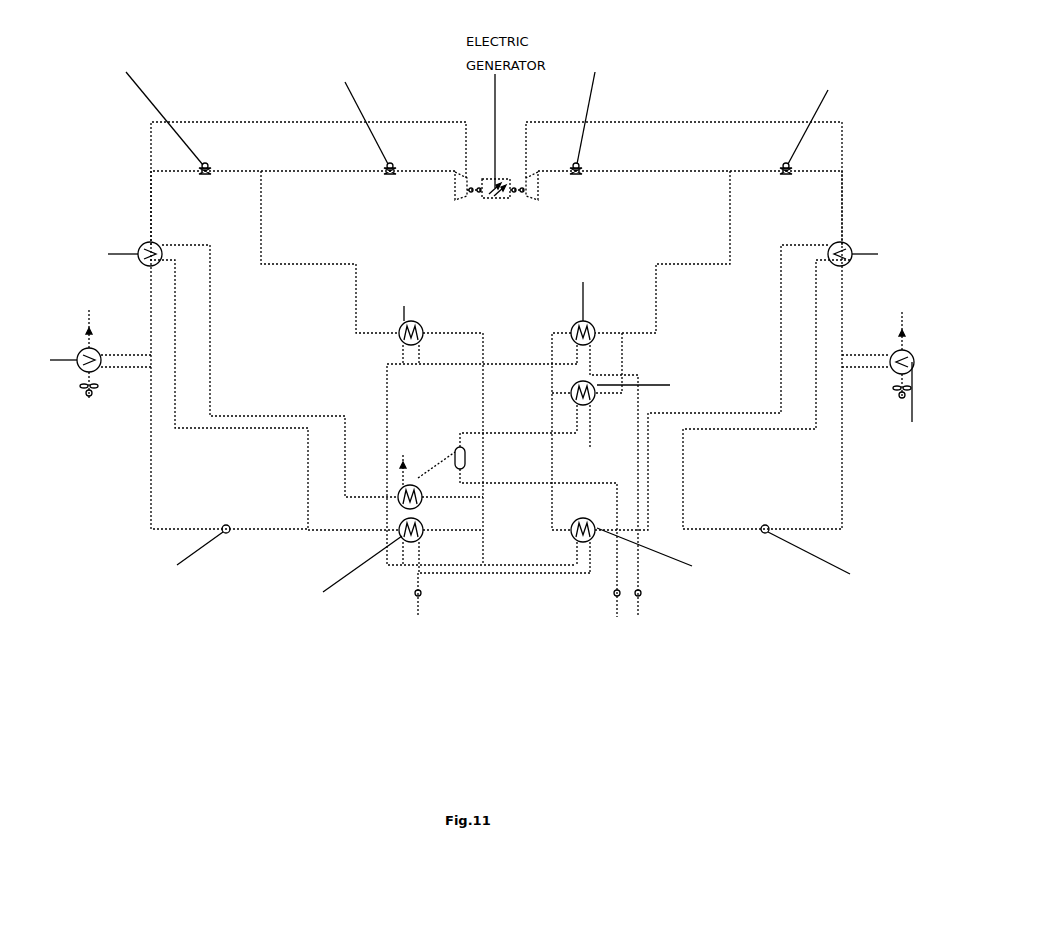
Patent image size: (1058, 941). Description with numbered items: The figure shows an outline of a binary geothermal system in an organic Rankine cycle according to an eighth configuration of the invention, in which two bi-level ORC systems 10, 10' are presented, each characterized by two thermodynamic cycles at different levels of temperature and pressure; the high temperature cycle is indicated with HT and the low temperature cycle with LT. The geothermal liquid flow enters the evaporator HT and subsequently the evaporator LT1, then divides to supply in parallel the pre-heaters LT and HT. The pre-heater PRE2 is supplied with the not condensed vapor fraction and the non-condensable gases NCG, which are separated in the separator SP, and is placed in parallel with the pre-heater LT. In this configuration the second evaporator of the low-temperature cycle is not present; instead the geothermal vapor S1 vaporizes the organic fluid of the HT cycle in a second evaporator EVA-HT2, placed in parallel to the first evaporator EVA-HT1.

The bi-level ORC system 10 is at (318, 322).
The bi-level ORC system 10' is at (721, 316).
The separator SP is at (462, 468).
The geothermal vapor S1 is at (591, 448).
The non-condensable gases NCG is at (400, 440).
The pre-heater PRE2 is at (402, 503).